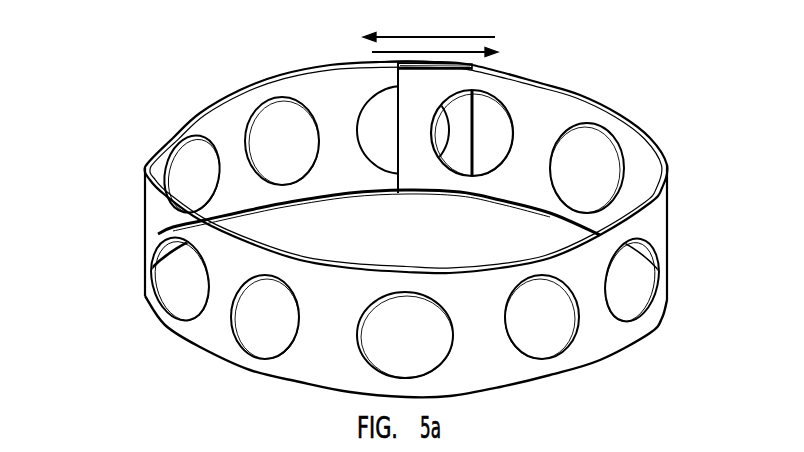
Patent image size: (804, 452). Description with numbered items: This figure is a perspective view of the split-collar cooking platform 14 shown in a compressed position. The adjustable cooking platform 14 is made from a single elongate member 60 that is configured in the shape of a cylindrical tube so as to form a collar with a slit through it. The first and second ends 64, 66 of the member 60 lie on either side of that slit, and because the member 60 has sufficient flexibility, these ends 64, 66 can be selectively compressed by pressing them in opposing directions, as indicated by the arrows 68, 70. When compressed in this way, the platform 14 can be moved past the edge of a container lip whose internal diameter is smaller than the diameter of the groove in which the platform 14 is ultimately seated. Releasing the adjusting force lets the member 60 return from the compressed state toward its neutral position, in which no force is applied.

The adjustable cooking platform 14 is at (391, 202).
The elongate member 60 is at (660, 222).
The first end 64 is at (400, 146).
The second end 66 is at (475, 69).
The arrow 68 is at (462, 36).
The arrow 70 is at (397, 61).